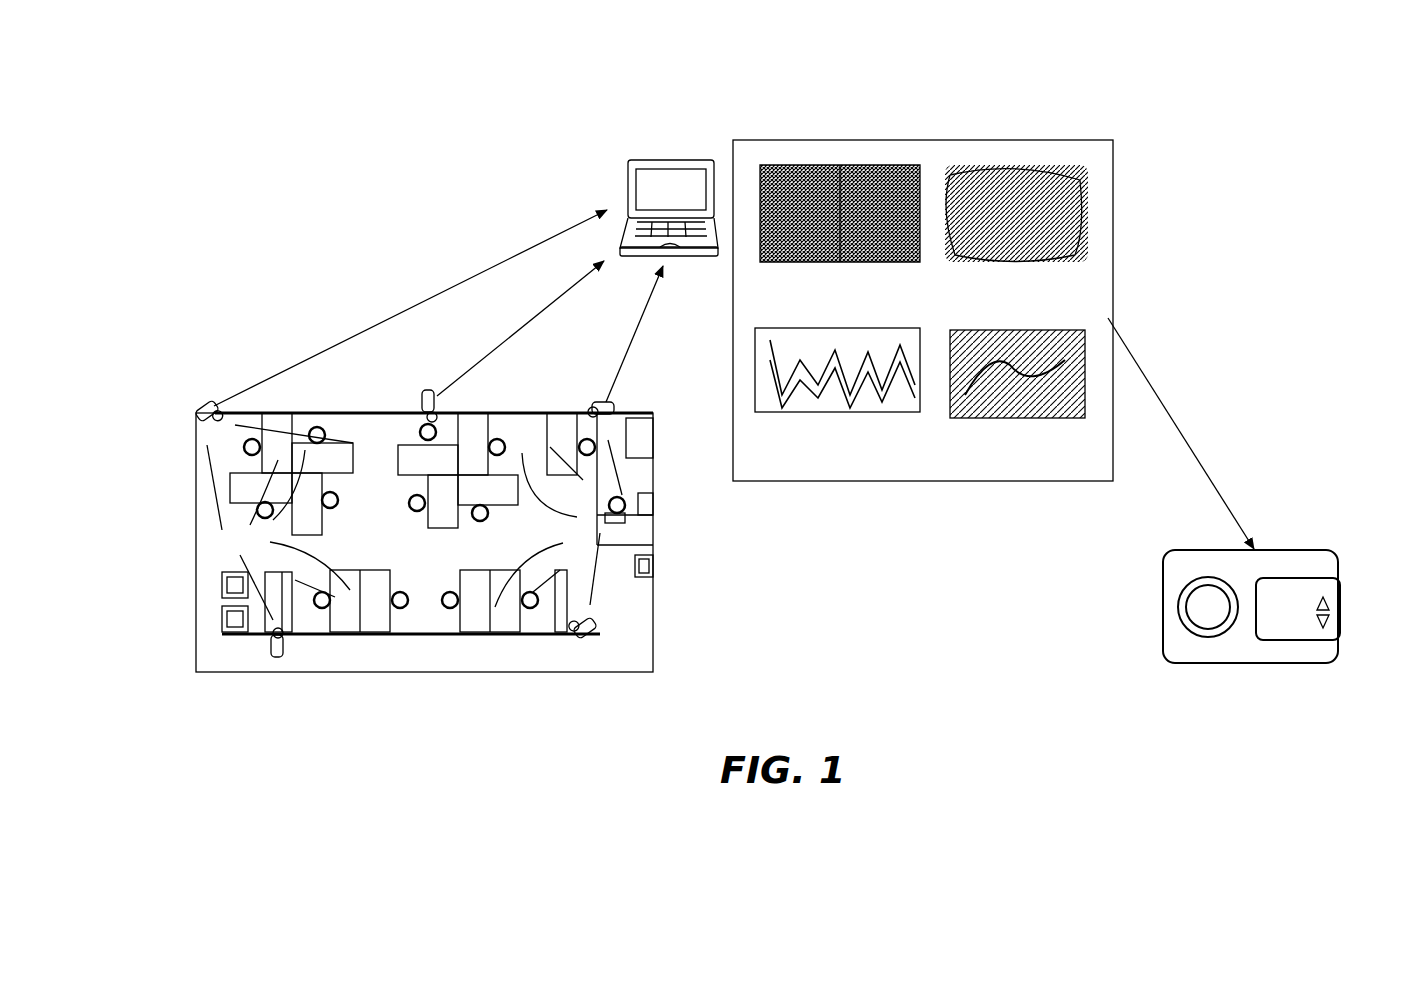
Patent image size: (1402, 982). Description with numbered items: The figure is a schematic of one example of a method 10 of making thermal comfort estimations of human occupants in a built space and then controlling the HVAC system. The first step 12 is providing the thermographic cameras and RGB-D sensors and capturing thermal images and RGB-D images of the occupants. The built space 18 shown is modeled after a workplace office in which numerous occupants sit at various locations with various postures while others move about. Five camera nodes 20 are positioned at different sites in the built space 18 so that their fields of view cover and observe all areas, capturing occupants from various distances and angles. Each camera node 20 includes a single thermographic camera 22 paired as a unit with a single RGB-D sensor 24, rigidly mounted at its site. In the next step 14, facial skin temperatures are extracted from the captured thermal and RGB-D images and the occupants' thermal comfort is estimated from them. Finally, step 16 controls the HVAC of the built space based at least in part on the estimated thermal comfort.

The method of making thermal comfort estimations 10 is at (1225, 252).
The providing and capturing step 12 is at (432, 516).
The extracting and estimating step 14 is at (930, 133).
The HVAC controlling step 16 is at (1340, 568).
The built space 18 is at (194, 529).
The camera node 20 is at (432, 510).
The thermographic camera 22 is at (432, 510).
The RGB-D sensor 24 is at (683, 640).